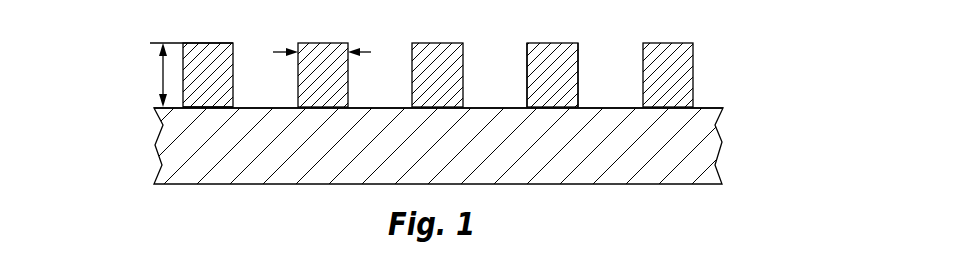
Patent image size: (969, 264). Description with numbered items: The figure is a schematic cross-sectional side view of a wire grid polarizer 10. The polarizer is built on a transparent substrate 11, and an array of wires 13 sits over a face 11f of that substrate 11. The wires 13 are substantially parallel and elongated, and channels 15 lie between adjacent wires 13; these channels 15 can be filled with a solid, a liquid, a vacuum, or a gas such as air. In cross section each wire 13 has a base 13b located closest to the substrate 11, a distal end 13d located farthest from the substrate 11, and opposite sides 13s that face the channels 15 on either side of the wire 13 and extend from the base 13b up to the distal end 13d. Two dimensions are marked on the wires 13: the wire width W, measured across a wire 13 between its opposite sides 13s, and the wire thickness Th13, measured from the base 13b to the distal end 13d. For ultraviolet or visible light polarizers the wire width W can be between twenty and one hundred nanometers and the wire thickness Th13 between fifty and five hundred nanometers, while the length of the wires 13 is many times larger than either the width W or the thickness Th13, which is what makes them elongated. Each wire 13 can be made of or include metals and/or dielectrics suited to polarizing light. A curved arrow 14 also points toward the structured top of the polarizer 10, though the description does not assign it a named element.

The wire grid polarizer 10 is at (90, 50).
The transparent substrate 11 is at (445, 155).
The face of the transparent substrate 11f is at (708, 106).
The wires 13 is at (438, 75).
The distal end 13d is at (187, 43).
The base 13b is at (184, 109).
The opposite sides 13s is at (589, 33).
The structured surface 14 is at (716, 53).
The channels 15 is at (276, 83).
The wire thickness Th13 is at (162, 75).
The wire width W is at (330, 52).